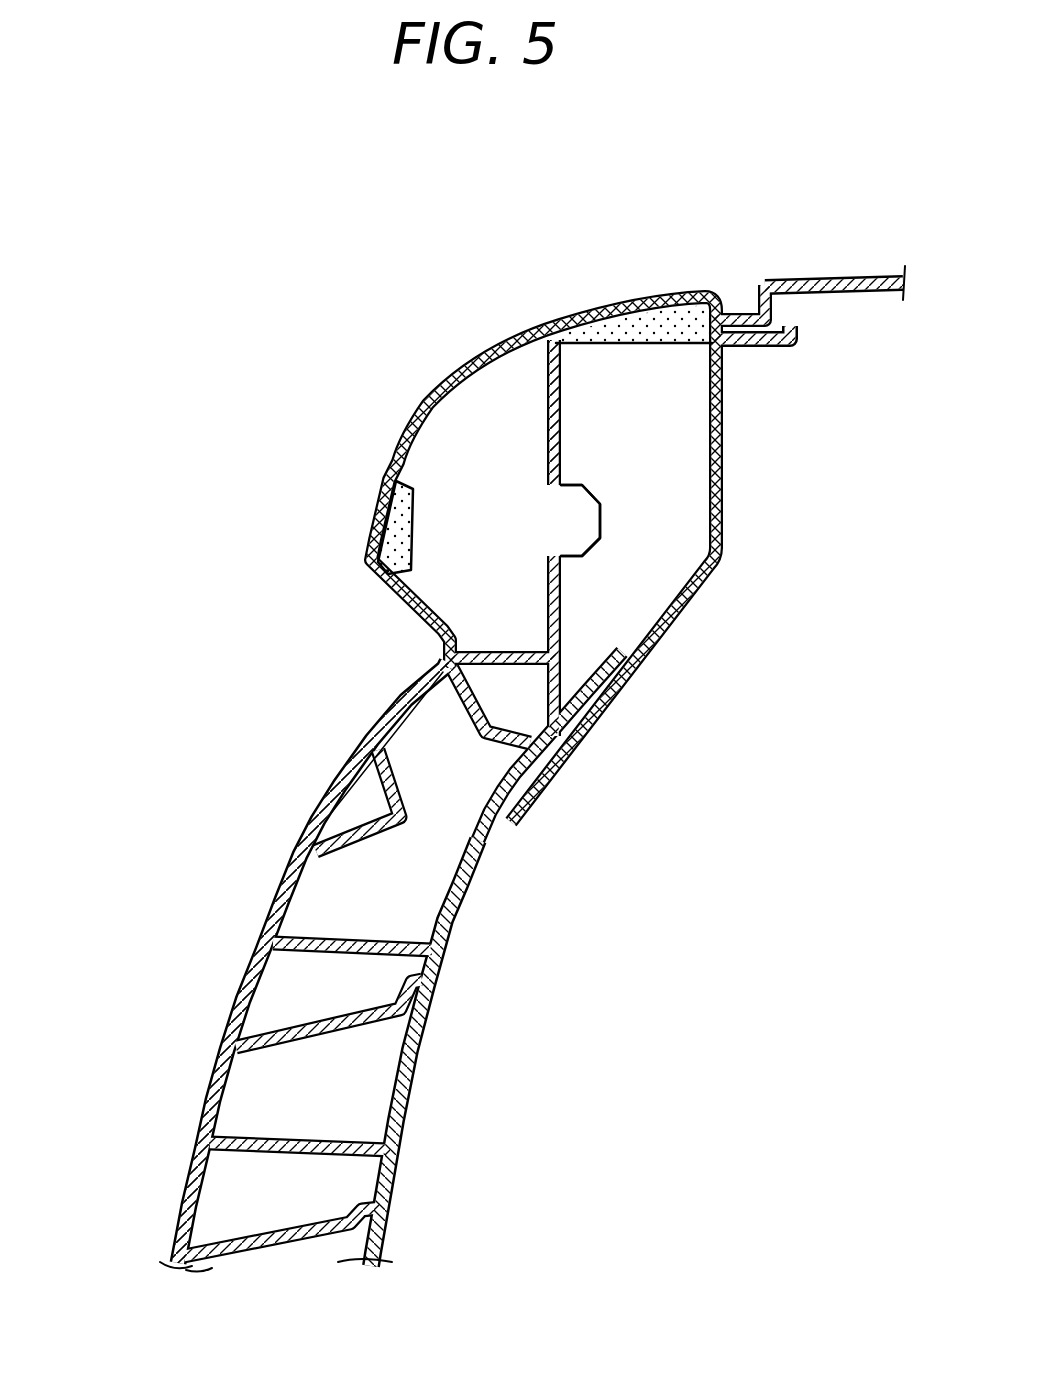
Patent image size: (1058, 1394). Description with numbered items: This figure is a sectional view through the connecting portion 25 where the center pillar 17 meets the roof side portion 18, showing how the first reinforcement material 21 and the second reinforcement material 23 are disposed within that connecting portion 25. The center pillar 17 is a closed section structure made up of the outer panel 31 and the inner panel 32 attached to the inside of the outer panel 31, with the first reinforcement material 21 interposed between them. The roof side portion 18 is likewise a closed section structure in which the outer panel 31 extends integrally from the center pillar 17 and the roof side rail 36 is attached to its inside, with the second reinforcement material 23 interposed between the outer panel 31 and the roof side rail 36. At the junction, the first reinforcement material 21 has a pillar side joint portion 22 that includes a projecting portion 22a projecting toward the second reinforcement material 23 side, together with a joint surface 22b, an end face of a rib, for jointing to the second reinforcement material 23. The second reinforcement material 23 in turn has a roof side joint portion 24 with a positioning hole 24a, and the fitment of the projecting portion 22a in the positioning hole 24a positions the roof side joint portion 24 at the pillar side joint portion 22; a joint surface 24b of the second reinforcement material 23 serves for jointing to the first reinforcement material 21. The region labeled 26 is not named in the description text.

The center pillar 17 is at (197, 981).
The roof side portion 18 is at (594, 272).
The first reinforcement material 21 is at (393, 740).
The pillar side joint portion 22 is at (453, 461).
The projecting portion 22a is at (594, 548).
The joint surface 22b is at (563, 620).
The second reinforcement material 23 is at (695, 402).
The roof side joint portion 24 is at (666, 480).
The positioning hole 24a is at (566, 505).
The joint surface 24b is at (546, 405).
The connecting portion 25 is at (339, 491).
The pad 26 is at (481, 415).
The outer panel 31 is at (183, 1181).
The inner panel 32 is at (457, 918).
The roof side rail 36 is at (576, 745).